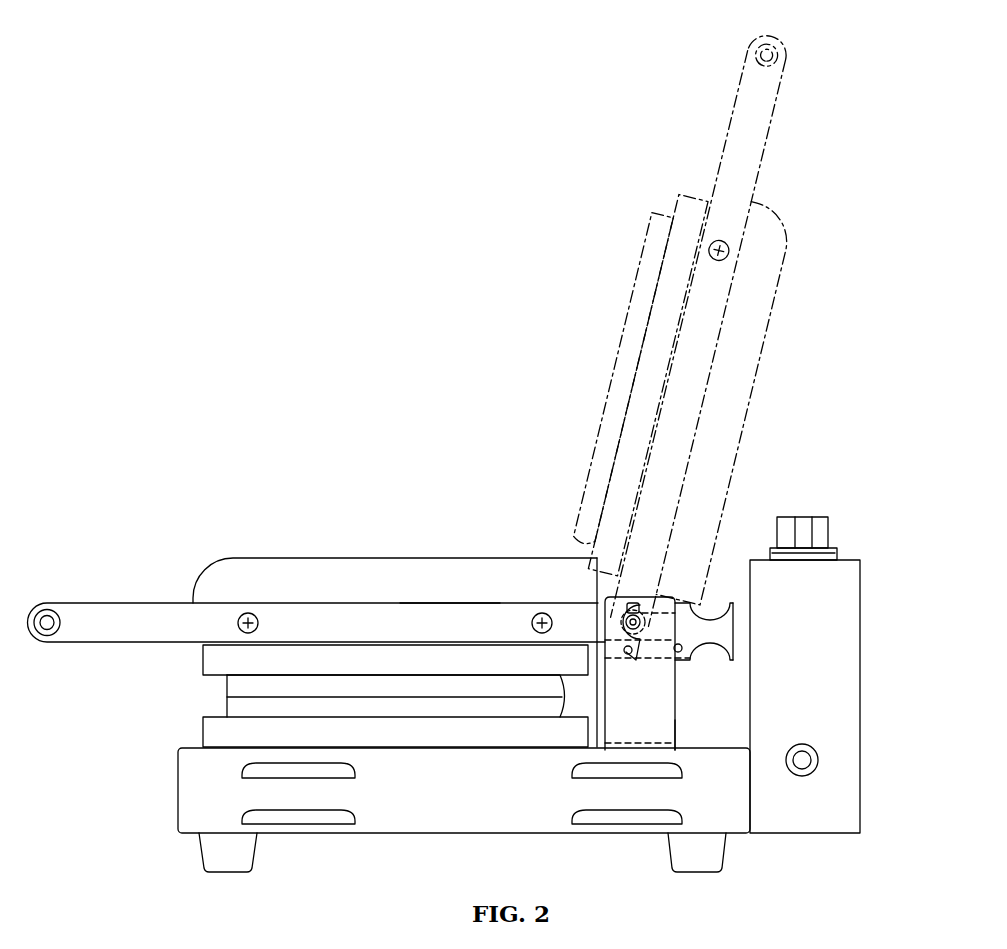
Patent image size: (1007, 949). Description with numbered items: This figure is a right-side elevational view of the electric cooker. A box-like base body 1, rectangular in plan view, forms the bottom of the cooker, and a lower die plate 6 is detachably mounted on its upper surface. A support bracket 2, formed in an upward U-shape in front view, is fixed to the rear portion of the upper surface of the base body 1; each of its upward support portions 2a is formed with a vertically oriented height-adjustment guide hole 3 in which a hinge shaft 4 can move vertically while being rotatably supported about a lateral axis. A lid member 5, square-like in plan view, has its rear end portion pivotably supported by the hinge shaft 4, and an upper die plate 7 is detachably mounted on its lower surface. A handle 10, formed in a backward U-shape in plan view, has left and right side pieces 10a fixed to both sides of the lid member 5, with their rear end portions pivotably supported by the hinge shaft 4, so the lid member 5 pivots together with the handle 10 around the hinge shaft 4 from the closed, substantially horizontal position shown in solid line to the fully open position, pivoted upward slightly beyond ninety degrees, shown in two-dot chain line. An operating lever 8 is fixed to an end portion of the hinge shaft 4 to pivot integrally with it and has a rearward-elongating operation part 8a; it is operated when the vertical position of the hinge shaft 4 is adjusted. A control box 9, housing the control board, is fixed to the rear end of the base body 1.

The base body 1 is at (178, 786).
The support bracket 2 is at (674, 673).
The upward support portion 2a is at (677, 725).
The height-adjustment guide hole 3 is at (632, 606).
The hinge shaft 4 is at (645, 622).
The lid member 5 is at (358, 556).
The lower die plate 6 is at (228, 703).
The upper die plate 7 is at (227, 686).
The operating lever 8 is at (796, 568).
The operation part 8a is at (735, 622).
The control box 9 is at (862, 683).
The handle 10 is at (453, 337).
The side piece 10a is at (456, 600).